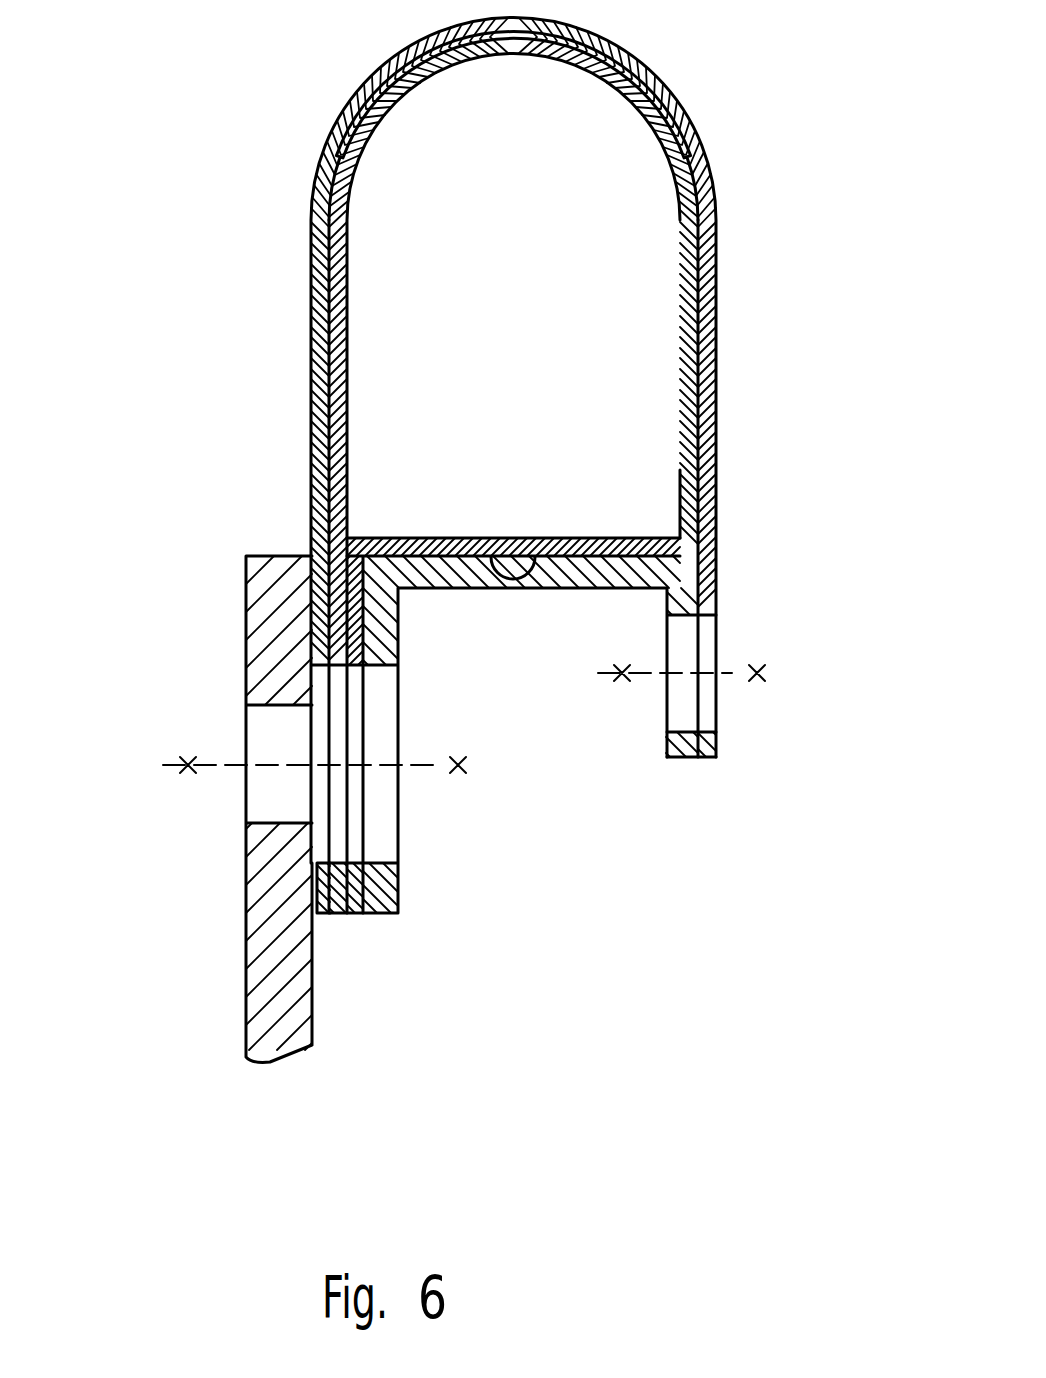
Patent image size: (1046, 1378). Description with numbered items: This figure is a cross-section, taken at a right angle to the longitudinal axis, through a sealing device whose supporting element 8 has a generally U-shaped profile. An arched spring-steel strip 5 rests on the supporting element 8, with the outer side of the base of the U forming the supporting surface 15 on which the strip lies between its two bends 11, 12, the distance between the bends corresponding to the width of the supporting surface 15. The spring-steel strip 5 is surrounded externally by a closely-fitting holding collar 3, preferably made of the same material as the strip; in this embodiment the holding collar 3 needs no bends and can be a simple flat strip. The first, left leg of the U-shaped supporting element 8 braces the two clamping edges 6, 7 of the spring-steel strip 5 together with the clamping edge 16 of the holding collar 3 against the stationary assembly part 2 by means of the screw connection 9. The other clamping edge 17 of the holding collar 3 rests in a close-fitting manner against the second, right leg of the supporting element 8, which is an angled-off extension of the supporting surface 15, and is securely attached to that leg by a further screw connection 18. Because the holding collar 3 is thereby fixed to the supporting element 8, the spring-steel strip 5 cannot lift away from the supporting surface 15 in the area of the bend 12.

The assembly part 2 is at (273, 888).
The holding collar 3 is at (716, 283).
The spring-steel strip 5 is at (347, 253).
The clamping edge 6 is at (337, 915).
The clamping edge 7 is at (353, 915).
The supporting element 8 is at (462, 568).
The clamping connection 9 is at (474, 768).
The bend 11 is at (349, 535).
The bend 12 is at (680, 533).
The supporting surface 15 is at (495, 557).
The clamping edge 16 is at (322, 915).
The clamping edge 17 is at (706, 757).
The screw connection 18 is at (765, 676).